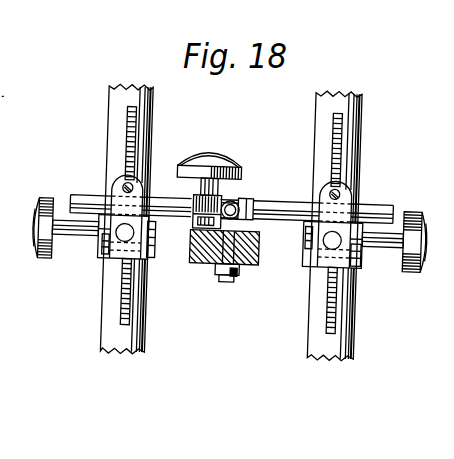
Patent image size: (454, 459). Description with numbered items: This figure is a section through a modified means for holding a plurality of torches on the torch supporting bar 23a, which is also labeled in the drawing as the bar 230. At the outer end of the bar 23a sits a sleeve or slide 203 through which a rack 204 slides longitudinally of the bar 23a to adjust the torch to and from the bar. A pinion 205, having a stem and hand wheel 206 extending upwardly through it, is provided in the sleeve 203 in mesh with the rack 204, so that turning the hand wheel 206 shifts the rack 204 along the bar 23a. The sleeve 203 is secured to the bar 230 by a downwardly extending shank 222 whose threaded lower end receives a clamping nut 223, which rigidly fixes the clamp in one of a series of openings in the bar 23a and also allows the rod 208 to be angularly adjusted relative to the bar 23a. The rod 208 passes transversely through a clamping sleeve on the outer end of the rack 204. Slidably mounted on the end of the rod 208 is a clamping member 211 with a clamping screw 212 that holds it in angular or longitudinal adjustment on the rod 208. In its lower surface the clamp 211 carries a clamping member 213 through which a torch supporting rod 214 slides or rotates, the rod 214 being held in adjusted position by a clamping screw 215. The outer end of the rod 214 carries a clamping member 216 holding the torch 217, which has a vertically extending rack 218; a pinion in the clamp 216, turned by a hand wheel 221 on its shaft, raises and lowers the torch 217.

The sleeve or slide 203 is at (253, 204).
The rack 204 is at (236, 203).
The pinion 205 is at (196, 219).
The hand wheel 206 is at (219, 154).
The rod 208 is at (165, 205).
The clamping member 211 is at (123, 185).
The clamping screw 212 is at (112, 194).
The clamping member 213 is at (111, 241).
The torch supporting rod 214 is at (120, 228).
The clamping screw 215 is at (103, 262).
The clamping member 216 is at (8, 88).
The torch 217 is at (107, 98).
The vertically extending rack 218 is at (123, 316).
The hand wheel 221 is at (35, 214).
The shank 222 is at (229, 278).
The clamping nut 223 is at (240, 271).
The torch supporting bar 23a is at (207, 266).
The hatched base block 230 is at (220, 293).